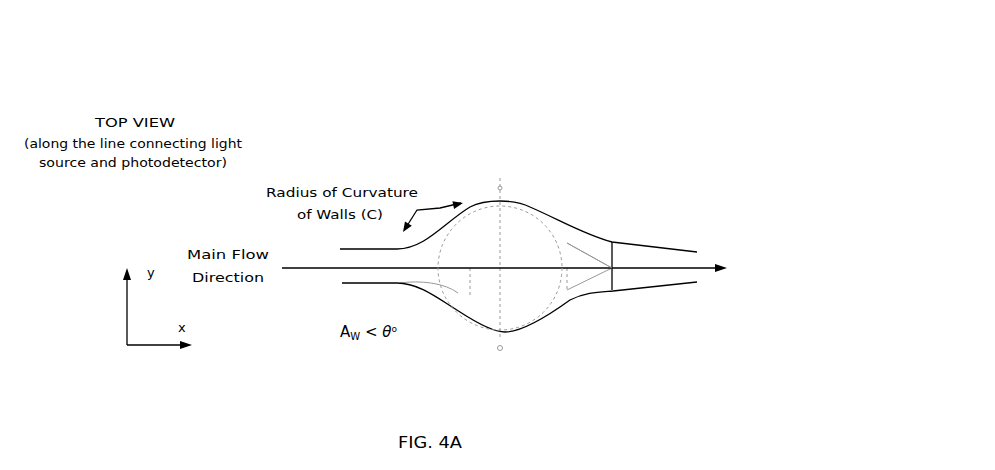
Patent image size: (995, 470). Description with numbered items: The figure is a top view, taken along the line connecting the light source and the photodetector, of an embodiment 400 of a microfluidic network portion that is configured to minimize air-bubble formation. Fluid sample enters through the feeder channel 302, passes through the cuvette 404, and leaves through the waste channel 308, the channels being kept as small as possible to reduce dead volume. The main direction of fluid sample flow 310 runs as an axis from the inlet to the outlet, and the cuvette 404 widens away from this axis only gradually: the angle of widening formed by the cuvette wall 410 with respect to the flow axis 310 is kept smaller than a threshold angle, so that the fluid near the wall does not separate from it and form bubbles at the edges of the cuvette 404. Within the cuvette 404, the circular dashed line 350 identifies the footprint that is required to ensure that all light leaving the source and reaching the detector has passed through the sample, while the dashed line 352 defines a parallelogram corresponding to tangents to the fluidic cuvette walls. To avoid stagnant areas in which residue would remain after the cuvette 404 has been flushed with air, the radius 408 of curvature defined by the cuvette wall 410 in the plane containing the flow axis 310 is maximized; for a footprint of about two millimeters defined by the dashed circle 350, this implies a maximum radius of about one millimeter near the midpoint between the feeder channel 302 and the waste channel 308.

The embodiment 400 is at (561, 60).
The cuvette wall 410 is at (440, 222).
The cuvette 404 is at (523, 230).
The radius of curvature 408 is at (398, 194).
The main direction of fluid sample flow 310 is at (712, 260).
The circular dashed line 350 is at (563, 283).
The dashed line 352 is at (590, 283).
The waste channel 308 is at (642, 275).
The feeder channel 302 is at (357, 275).